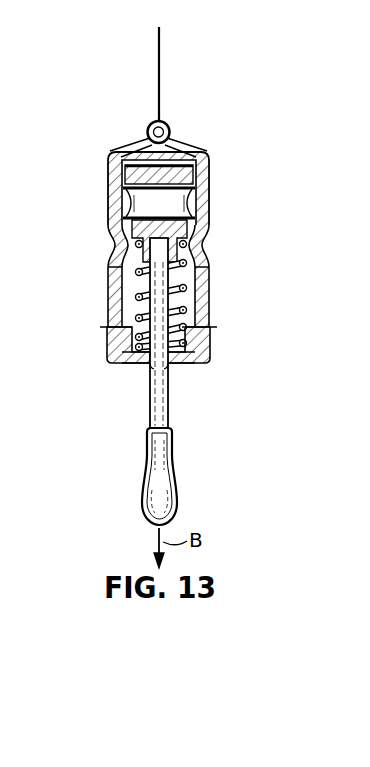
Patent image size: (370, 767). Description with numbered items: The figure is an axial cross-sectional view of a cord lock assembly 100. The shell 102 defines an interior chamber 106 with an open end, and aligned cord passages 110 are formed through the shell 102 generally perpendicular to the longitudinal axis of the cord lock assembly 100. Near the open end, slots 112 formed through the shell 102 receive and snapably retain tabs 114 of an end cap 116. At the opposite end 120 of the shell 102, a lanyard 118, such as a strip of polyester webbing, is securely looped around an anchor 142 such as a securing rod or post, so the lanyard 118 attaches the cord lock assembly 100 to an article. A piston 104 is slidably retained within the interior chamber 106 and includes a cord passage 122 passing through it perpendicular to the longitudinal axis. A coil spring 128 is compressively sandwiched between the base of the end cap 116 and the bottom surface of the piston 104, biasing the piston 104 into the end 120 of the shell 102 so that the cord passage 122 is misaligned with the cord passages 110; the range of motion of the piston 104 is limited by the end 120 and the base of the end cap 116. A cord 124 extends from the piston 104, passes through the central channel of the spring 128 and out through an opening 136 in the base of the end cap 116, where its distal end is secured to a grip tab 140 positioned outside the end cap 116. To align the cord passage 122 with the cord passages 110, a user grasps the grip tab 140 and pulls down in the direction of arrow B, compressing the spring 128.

The cord lock assembly 100 is at (193, 95).
The shell 102 is at (107, 198).
The piston 104 is at (203, 238).
The interior chamber 106 is at (187, 203).
The cord passages 110 is at (105, 248).
The slots 112 is at (115, 330).
The tabs 114 is at (115, 331).
The end cap 116 is at (191, 359).
The lanyard 118 is at (160, 62).
The end of the shell 120 is at (184, 129).
The cord passage 122 is at (191, 185).
The cord 124 is at (150, 377).
The coil spring 128 is at (134, 301).
The opening 136 is at (169, 364).
The grip tab 140 is at (174, 488).
The anchor 142 is at (151, 124).